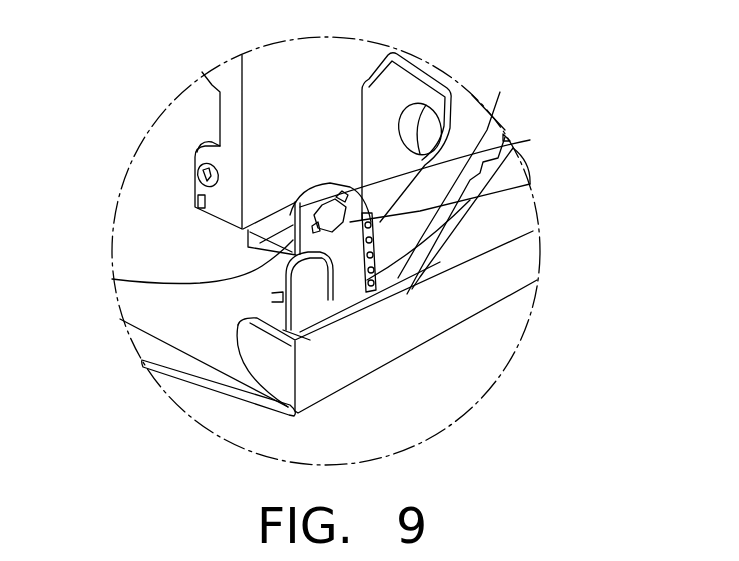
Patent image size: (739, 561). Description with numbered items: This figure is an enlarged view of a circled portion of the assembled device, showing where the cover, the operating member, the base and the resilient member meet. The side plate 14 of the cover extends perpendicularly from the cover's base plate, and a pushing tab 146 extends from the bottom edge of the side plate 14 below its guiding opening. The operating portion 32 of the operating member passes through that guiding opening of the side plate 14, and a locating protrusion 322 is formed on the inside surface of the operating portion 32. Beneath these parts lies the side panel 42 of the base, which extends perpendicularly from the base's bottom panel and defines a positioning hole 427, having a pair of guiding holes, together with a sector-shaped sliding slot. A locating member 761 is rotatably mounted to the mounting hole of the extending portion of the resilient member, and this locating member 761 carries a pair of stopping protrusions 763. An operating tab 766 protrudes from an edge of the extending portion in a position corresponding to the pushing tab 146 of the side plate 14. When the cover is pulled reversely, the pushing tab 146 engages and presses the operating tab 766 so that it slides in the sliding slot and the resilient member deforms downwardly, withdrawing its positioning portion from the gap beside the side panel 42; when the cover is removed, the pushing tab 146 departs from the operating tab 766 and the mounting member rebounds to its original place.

The side plate 14 is at (283, 65).
The operating portion 32 is at (398, 86).
The locating protrusion 322 is at (433, 125).
The positioning hole 427 is at (530, 140).
The locating member 761 is at (530, 184).
The pushing tab 146 is at (370, 228).
The operating tab 766 is at (368, 283).
The stopping protrusions 763 is at (112, 279).
The side panel 42 is at (363, 337).